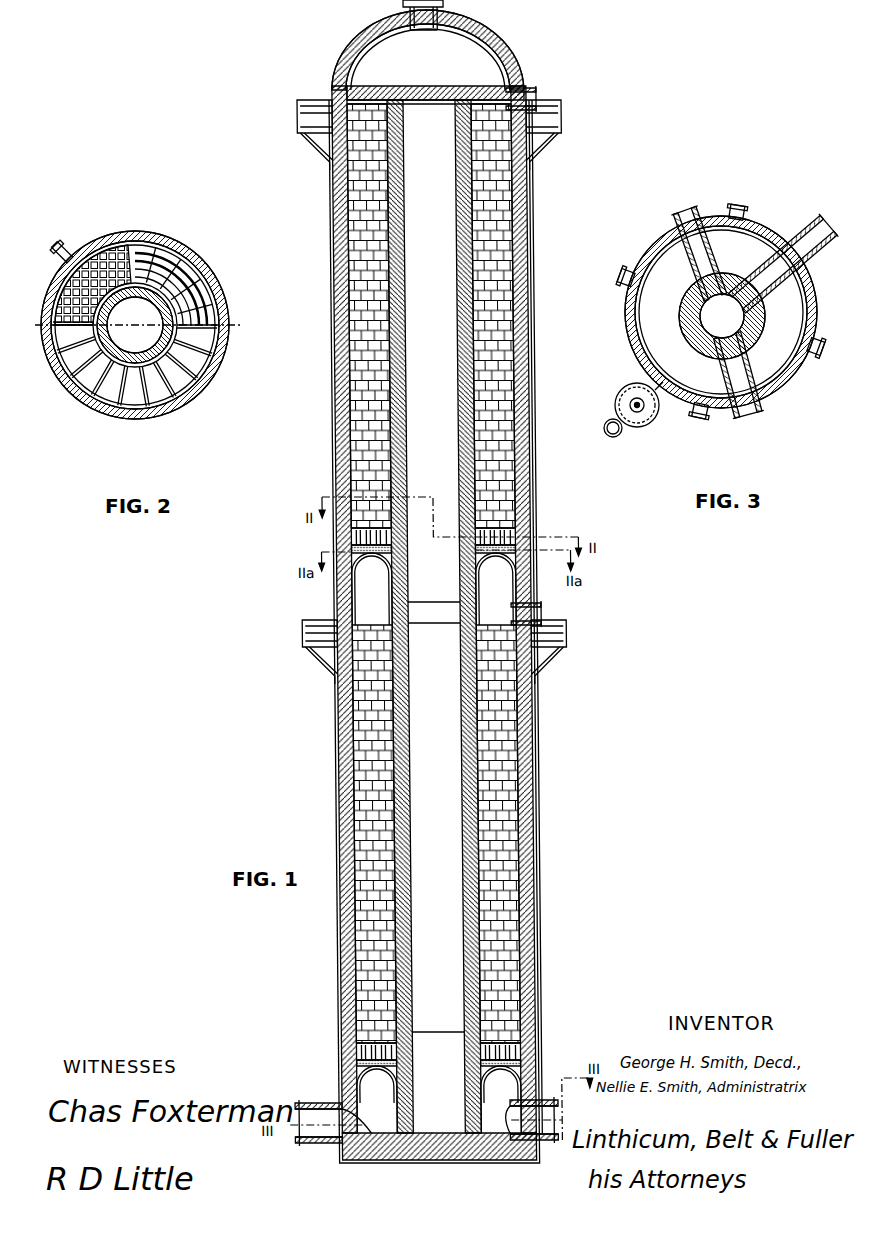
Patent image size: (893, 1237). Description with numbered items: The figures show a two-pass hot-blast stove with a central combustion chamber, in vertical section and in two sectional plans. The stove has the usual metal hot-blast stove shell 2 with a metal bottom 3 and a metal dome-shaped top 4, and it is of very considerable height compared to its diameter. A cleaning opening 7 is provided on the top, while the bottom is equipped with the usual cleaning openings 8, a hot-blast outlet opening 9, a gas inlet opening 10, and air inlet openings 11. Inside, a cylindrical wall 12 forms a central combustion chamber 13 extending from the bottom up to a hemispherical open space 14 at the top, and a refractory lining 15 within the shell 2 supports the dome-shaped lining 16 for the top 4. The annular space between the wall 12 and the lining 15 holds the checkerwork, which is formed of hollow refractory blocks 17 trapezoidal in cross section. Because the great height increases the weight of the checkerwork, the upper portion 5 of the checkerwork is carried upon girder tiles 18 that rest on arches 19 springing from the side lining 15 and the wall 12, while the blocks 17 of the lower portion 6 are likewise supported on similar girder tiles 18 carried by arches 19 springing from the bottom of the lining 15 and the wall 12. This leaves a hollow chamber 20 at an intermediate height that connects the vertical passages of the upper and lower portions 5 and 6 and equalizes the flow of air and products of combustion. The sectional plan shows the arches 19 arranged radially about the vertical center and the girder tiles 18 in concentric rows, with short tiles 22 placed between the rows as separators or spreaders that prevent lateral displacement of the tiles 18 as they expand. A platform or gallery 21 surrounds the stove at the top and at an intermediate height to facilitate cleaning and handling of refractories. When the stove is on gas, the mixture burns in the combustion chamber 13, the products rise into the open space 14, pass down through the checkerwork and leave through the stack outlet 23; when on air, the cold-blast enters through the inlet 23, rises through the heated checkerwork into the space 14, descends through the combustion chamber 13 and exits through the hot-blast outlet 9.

In FIG. 1, the metal hot-blast stove shell 2 is at (525, 848).
In FIG. 1, the metal bottom 3 is at (440, 1160).
In FIG. 1, the metal dome-shaped top 4 is at (348, 62).
In FIG. 1, the upper portion of the checkerwork 5 is at (490, 272).
In FIG. 1, the lower portion of the checkerwork 6 is at (503, 898).
In FIG. 1, the cleaning opening 7 is at (445, 6).
In FIG. 1, the cleaning openings 8 is at (530, 98).
In FIG. 2, the cleaning openings 8 is at (66, 258).
In FIG. 3, the cleaning openings 8 is at (738, 222).
In FIG. 3, the hot-blast outlet opening 9 is at (800, 228).
In FIG. 3, the gas inlet opening 10 is at (690, 226).
In FIG. 3, the air inlet opening 11 is at (750, 410).
In FIG. 1, the cylindrical wall 12 is at (398, 745).
In FIG. 2, the cylindrical wall 12 is at (117, 290).
In FIG. 3, the cylindrical wall 12 is at (680, 318).
In FIG. 1, the central combustion chamber 13 is at (436, 817).
In FIG. 2, the central combustion chamber 13 is at (137, 325).
In FIG. 3, the central combustion chamber 13 is at (722, 316).
In FIG. 1, the hemispherical open space 14 is at (435, 79).
In FIG. 1, the refractory lining 15 is at (336, 325).
In FIG. 1, the dome-shaped lining 16 is at (507, 42).
In FIG. 1, the hollow refractory blocks 17 is at (362, 428).
In FIG. 2, the hollow refractory blocks 17 is at (110, 242).
In FIG. 1, the girder tiles 18 is at (350, 536).
In FIG. 2, the girder tiles 18 is at (181, 252).
In FIG. 1, the arches 19 is at (367, 558).
In FIG. 2, the arches 19 is at (72, 380).
In FIG. 1, the hollow chamber 20 is at (434, 607).
In FIG. 1, the platform or gallery 21 is at (305, 122).
In FIG. 1, the short tiles 22 is at (386, 539).
In FIG. 2, the short tiles 22 is at (162, 240).
In FIG. 1, the stack outlet 23 is at (532, 1105).
In FIG. 3, the stack outlet 23 is at (666, 382).